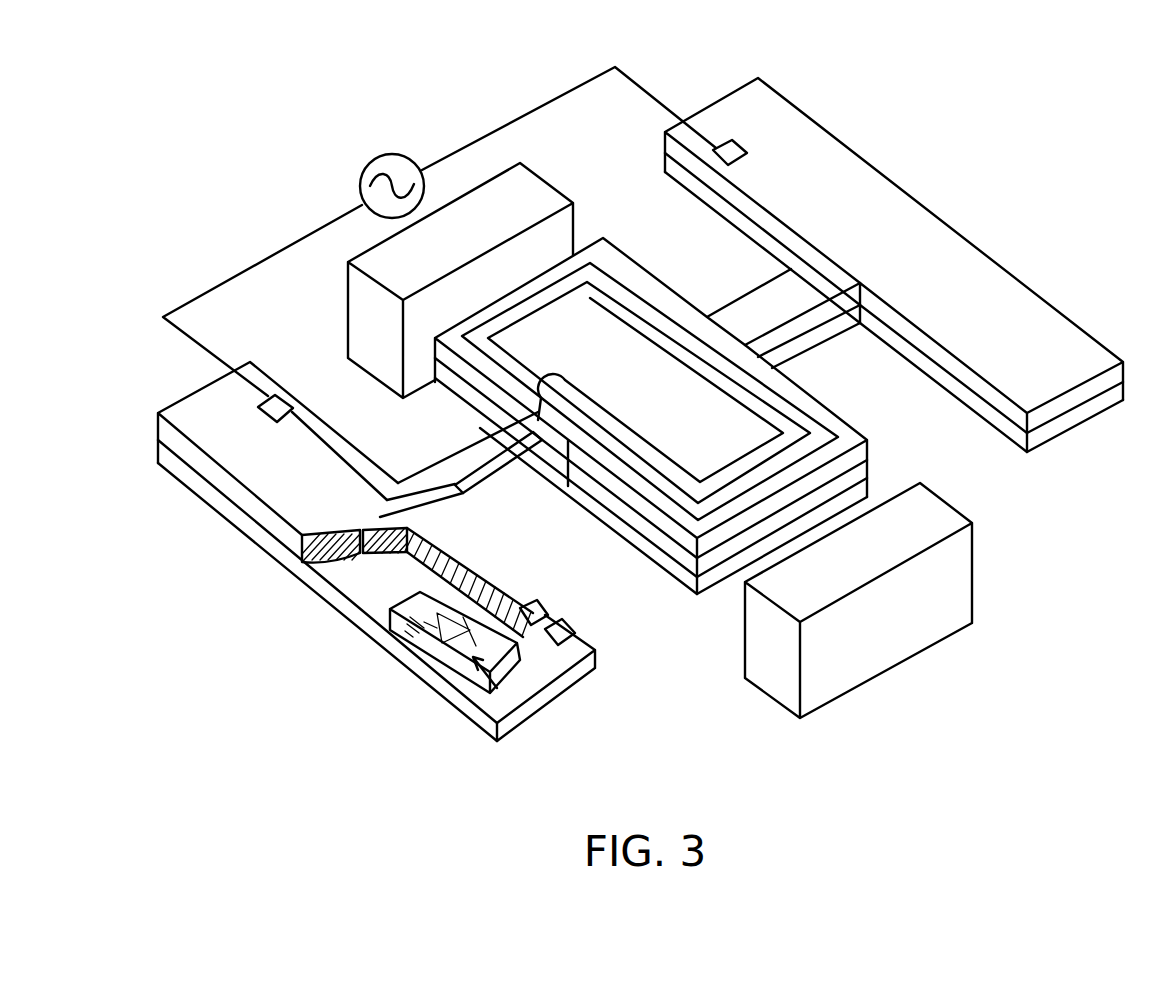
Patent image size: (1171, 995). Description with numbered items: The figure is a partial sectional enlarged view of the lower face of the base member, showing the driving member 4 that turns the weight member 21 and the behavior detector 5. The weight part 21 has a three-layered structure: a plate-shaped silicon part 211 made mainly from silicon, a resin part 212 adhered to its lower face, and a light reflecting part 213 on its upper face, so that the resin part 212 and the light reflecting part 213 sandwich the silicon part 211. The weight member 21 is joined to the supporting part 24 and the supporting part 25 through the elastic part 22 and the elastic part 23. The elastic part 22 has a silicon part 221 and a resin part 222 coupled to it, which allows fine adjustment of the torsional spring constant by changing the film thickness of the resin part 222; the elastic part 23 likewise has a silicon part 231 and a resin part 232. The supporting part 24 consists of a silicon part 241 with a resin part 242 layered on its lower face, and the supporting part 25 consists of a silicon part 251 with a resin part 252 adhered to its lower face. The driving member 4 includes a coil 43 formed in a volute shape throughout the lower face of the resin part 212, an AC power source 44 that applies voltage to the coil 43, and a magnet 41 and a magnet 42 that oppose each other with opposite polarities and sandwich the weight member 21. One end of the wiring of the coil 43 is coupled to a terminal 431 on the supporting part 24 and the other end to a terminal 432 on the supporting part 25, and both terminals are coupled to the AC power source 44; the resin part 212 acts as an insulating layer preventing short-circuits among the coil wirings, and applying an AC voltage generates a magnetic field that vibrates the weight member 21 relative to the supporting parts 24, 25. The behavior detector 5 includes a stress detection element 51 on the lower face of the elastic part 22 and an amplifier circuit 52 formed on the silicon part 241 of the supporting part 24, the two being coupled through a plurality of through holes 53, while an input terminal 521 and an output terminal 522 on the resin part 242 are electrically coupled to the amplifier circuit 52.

The driving member 4 is at (476, 62).
The magnet 41 is at (373, 263).
The magnet 42 is at (913, 517).
The coil 43 is at (612, 280).
The terminal 431 is at (272, 417).
The terminal 432 is at (747, 150).
The AC power source 44 is at (377, 161).
The weight part 21 is at (651, 497).
The silicon part 211 is at (672, 566).
The resin part 212 is at (703, 549).
The light reflecting part 213 is at (650, 558).
The elastic part 22 is at (598, 391).
The silicon part 221 is at (510, 448).
The resin part 222 is at (430, 472).
The elastic part 23 is at (826, 346).
The silicon part 231 is at (810, 338).
The resin part 232 is at (823, 310).
The supporting part 24 is at (327, 551).
The silicon part 241 is at (353, 613).
The resin part 242 is at (284, 545).
The supporting part 25 is at (896, 318).
The silicon part 251 is at (983, 500).
The resin part 252 is at (990, 397).
The behavior detector 5 is at (469, 658).
The stress detection element 51 is at (600, 668).
The amplifier circuit 52 is at (500, 690).
The through holes 53 is at (522, 605).
The input terminal 521 is at (562, 632).
The output terminal 522 is at (540, 610).